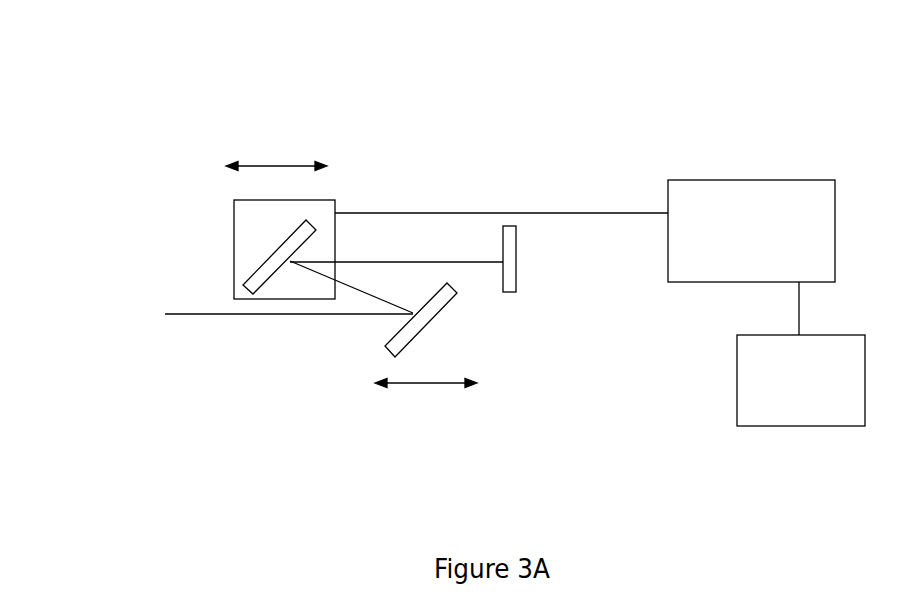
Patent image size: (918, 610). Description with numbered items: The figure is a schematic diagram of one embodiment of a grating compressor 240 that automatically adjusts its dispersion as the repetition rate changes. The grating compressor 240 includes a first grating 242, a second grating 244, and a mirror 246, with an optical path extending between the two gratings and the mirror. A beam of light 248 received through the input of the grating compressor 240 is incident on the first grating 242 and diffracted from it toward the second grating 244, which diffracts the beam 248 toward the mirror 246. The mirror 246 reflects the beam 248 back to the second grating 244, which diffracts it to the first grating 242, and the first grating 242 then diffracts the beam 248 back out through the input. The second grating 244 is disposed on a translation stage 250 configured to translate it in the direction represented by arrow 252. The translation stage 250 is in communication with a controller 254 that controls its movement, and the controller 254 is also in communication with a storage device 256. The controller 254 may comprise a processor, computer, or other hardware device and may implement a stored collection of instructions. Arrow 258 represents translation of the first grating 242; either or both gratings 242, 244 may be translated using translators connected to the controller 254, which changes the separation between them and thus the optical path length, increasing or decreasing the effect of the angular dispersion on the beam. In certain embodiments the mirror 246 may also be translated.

The grating compressor 240 is at (132, 73).
The first grating 242 is at (380, 346).
The second grating 244 is at (262, 272).
The mirror 246 is at (513, 278).
The beam of light 248 is at (215, 314).
The translation stage 250 is at (234, 233).
The arrow 252 is at (300, 165).
The controller 254 is at (765, 186).
The storage device 256 is at (807, 415).
The arrow 258 is at (432, 383).